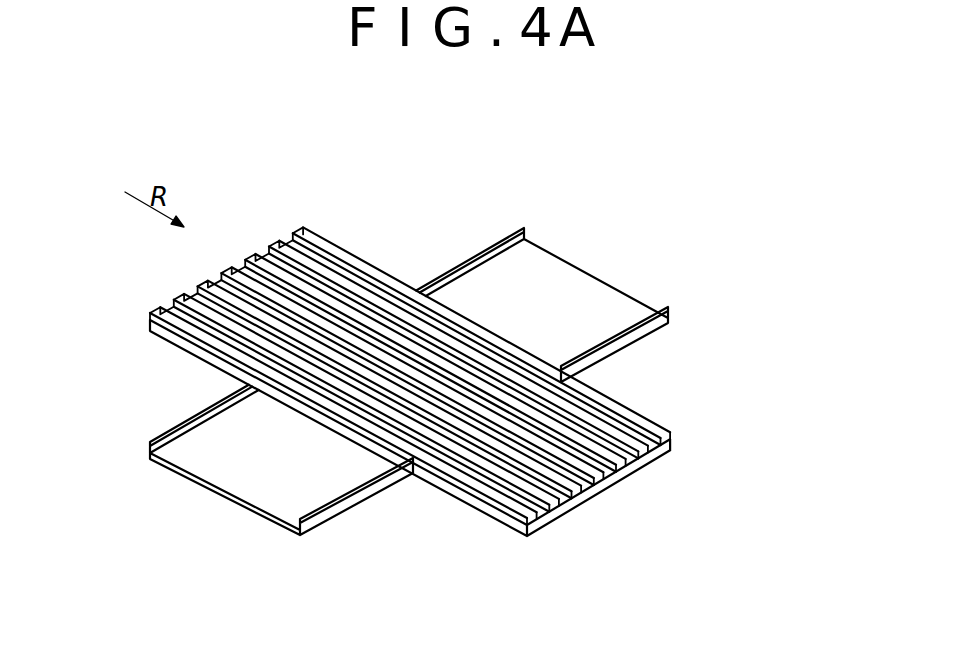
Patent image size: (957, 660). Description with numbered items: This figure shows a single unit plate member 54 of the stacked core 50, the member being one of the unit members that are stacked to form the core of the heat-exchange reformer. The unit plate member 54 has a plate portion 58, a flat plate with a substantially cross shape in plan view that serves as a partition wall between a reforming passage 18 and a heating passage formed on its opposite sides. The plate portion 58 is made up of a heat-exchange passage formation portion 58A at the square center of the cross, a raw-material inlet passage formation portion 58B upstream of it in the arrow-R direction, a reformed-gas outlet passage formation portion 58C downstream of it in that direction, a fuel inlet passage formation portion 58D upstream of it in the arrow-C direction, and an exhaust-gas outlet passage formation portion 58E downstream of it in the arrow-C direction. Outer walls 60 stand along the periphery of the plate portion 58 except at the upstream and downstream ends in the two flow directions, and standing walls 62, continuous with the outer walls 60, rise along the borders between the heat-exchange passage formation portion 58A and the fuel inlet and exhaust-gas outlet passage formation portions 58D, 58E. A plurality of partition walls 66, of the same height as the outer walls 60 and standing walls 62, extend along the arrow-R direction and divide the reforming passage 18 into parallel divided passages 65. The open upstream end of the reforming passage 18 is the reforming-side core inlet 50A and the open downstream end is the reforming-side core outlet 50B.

The stacked core 50 is at (721, 314).
The reforming-side core inlet 50A is at (208, 313).
The reforming-side core outlet 50B is at (670, 450).
The unit plate member 54 is at (730, 148).
The plate portion 58 is at (703, 168).
The heat-exchange passage formation portion 58A is at (431, 395).
The raw-material inlet passage formation portion 58B is at (357, 283).
The reformed-gas outlet passage formation portion 58C is at (537, 432).
The fuel inlet passage formation portion 58D is at (253, 438).
The exhaust-gas outlet passage formation portion 58E is at (585, 290).
The outer wall 60 is at (427, 473).
The standing wall 62 is at (338, 420).
The divided passage 65 is at (443, 428).
The reforming passage 18 is at (528, 584).
The partition wall 66 is at (598, 483).